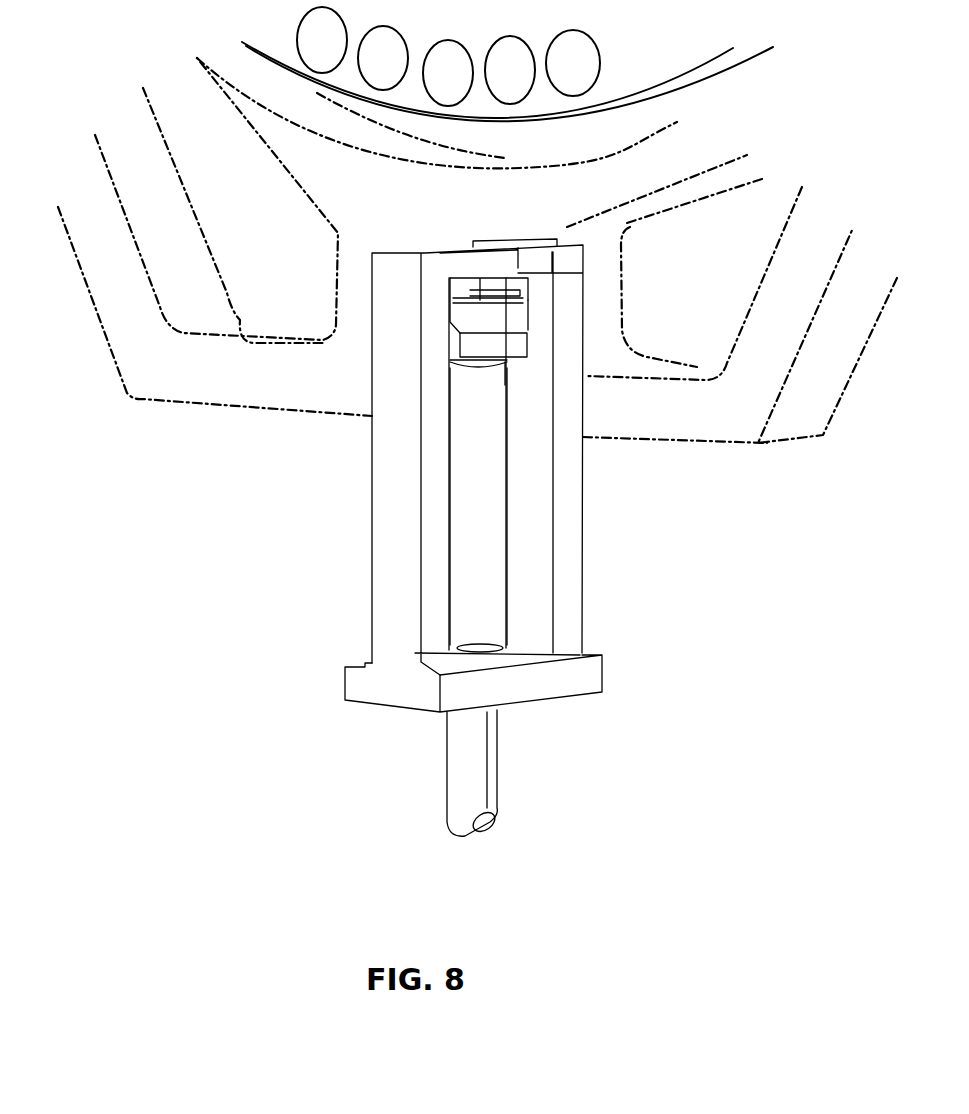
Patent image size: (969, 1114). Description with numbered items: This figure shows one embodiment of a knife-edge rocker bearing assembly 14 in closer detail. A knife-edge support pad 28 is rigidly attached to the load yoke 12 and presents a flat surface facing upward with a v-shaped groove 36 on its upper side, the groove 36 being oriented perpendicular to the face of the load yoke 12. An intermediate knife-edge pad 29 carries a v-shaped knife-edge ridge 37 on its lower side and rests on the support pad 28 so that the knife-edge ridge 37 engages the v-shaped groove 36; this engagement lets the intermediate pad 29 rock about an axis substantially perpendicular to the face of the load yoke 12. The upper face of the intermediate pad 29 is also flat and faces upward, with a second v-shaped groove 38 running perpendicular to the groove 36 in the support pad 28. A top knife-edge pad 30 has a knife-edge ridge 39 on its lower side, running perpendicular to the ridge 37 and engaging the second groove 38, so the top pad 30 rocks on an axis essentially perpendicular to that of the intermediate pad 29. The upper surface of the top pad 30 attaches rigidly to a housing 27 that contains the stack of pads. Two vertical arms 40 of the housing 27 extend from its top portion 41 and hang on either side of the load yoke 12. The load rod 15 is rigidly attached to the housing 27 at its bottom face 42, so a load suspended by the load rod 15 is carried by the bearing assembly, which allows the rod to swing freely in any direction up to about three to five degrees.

The load yoke 12 is at (185, 402).
The knife-edge rocker bearing assembly 14 is at (350, 489).
The load rod 15 is at (502, 772).
The housing 27 is at (371, 573).
The knife-edge support pad 28 is at (505, 362).
The intermediate knife-edge pad 29 is at (525, 305).
The top knife-edge pad 30 is at (525, 283).
The v-shaped groove 36 is at (515, 300).
The knife-edge ridge 37 is at (470, 313).
The second v-shaped groove 38 is at (470, 313).
The knife-edge ridge 39 is at (520, 292).
The vertical arms 40 is at (443, 513).
The top portion 41 is at (520, 246).
The bottom face 42 is at (572, 698).